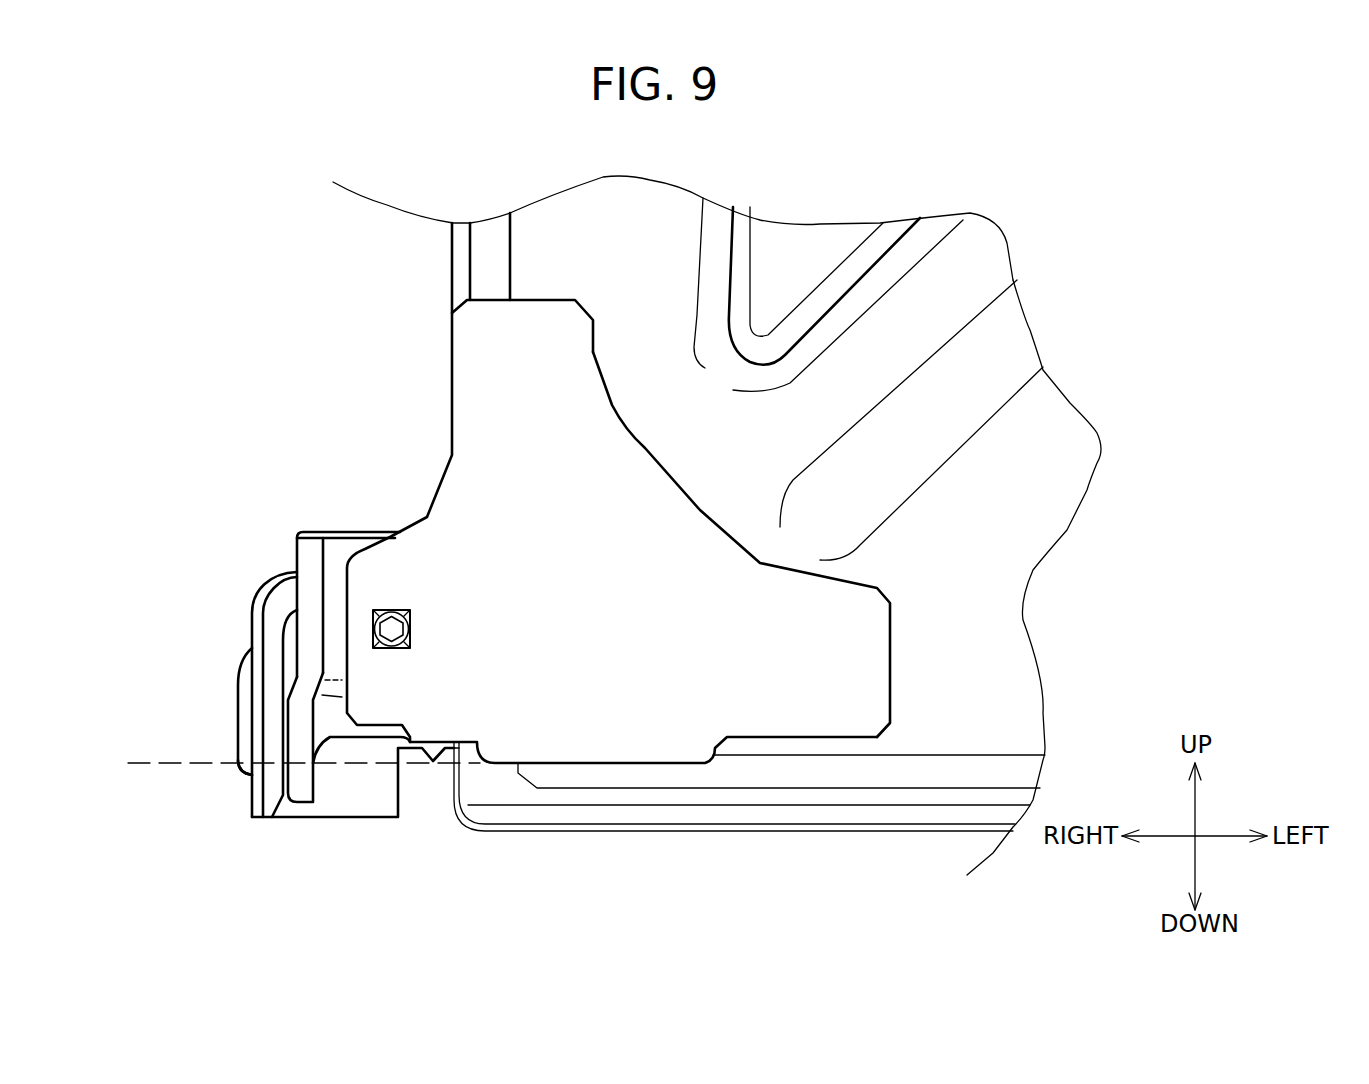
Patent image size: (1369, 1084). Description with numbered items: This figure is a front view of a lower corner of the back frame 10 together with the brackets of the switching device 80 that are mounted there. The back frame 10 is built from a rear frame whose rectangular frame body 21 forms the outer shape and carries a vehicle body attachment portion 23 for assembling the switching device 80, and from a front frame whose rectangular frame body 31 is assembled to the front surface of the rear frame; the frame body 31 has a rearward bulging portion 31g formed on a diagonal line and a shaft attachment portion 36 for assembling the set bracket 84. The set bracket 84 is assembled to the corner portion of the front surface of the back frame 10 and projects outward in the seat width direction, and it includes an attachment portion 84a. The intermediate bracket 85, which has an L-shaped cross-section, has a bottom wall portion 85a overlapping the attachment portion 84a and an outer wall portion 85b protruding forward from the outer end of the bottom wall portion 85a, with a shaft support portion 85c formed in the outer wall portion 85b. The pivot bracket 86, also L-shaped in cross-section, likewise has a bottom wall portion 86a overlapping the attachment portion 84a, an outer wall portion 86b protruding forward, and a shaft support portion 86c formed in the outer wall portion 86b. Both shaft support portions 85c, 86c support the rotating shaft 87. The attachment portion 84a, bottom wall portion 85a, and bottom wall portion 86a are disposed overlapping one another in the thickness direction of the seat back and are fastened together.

The back frame 10 is at (242, 172).
The switching device 80 is at (197, 455).
The set bracket 84 is at (599, 488).
The attachment portion 84a is at (391, 610).
The intermediate bracket 85 is at (312, 651).
The bottom wall portion 85a is at (350, 545).
The outer wall portion 85b is at (302, 557).
The shaft support portion 85c is at (313, 763).
The pivot bracket 86 is at (302, 736).
The bottom wall portion 86a is at (332, 800).
The outer wall portion 86b is at (257, 692).
The shaft support portion 86c is at (245, 768).
The rotating shaft 87 is at (140, 762).
The shaft attachment portion 36 is at (700, 510).
The frame body 31 is at (847, 557).
The rearward bulging portion 31g is at (918, 470).
The frame body 21 is at (725, 831).
The vehicle body attachment portion 23 is at (457, 772).